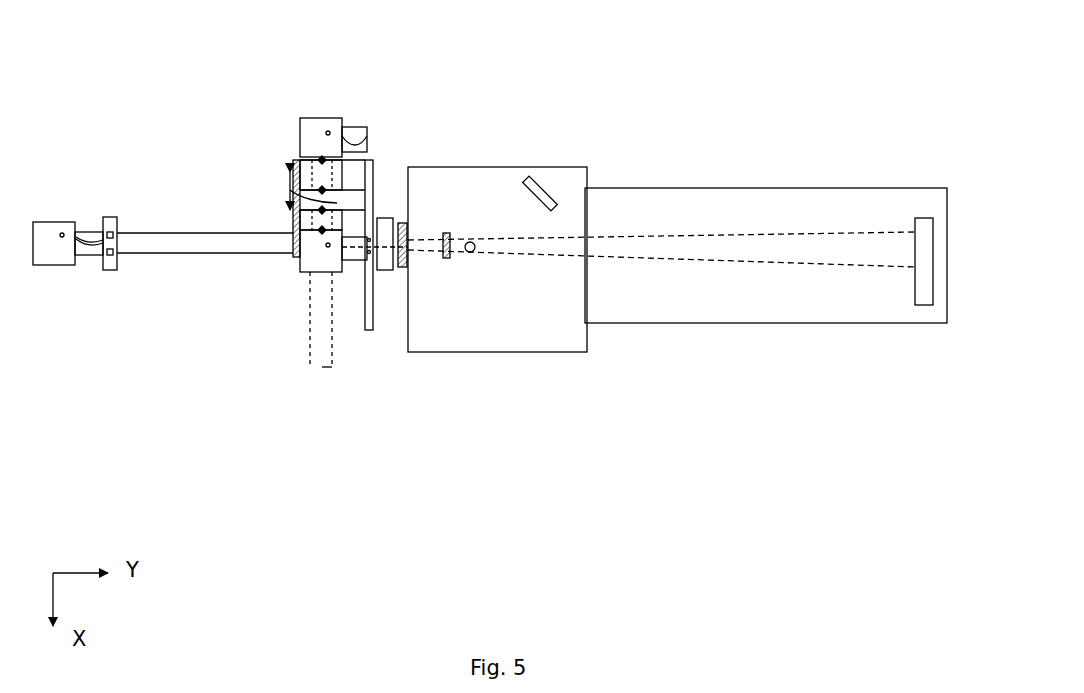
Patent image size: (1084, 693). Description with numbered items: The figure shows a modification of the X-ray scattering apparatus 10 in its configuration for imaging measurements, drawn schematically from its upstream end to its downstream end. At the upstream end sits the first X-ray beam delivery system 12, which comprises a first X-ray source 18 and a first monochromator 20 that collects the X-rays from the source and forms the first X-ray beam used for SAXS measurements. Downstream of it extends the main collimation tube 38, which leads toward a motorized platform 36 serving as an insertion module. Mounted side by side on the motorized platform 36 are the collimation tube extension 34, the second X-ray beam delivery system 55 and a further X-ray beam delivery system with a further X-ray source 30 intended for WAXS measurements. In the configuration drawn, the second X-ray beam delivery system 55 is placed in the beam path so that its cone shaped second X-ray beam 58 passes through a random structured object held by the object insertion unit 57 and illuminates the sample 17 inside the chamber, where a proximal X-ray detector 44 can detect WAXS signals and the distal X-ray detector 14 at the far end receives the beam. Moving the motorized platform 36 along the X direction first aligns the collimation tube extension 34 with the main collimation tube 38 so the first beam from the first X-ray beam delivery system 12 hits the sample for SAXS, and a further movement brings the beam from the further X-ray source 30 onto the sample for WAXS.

The X-ray scattering apparatus 10 is at (480, 100).
The first X-ray beam delivery system 12 is at (80, 190).
The distal X-ray detector 14 is at (921, 217).
The sample 17 is at (470, 252).
The first X-ray source 18 is at (57, 264).
The first monochromator 20 is at (88, 250).
The further X-ray source 30 is at (317, 117).
The collimation tube extension 34 is at (289, 163).
The motorized platform 36 is at (312, 366).
The main collimation tube 38 is at (203, 245).
The proximal X-ray detector 44 is at (546, 194).
The second X-ray beam delivery system 55 is at (310, 278).
The object insertion unit 57 is at (446, 260).
The second X-ray beam 58 is at (658, 258).